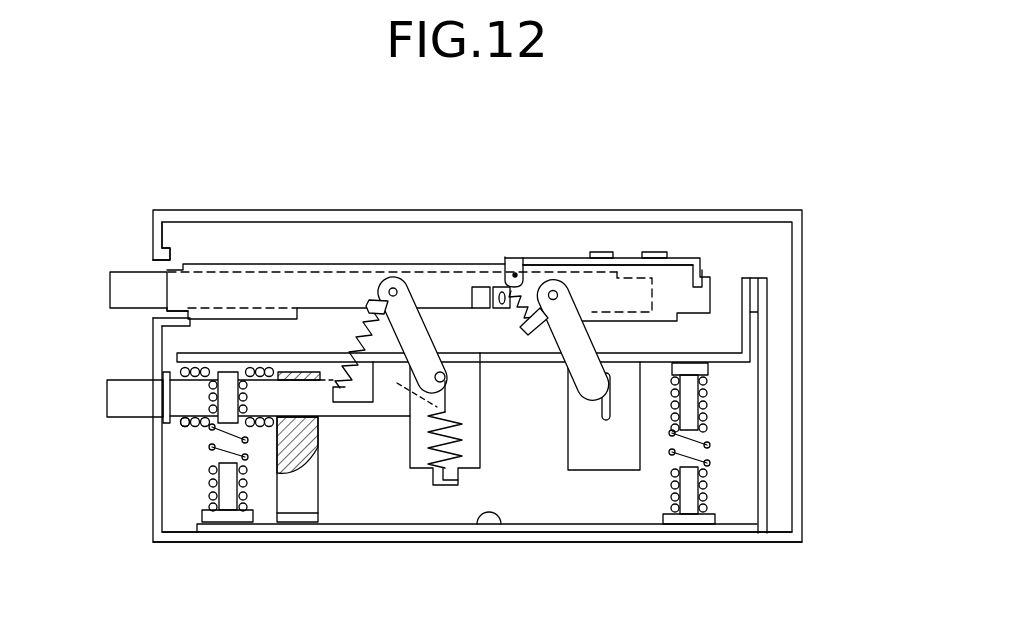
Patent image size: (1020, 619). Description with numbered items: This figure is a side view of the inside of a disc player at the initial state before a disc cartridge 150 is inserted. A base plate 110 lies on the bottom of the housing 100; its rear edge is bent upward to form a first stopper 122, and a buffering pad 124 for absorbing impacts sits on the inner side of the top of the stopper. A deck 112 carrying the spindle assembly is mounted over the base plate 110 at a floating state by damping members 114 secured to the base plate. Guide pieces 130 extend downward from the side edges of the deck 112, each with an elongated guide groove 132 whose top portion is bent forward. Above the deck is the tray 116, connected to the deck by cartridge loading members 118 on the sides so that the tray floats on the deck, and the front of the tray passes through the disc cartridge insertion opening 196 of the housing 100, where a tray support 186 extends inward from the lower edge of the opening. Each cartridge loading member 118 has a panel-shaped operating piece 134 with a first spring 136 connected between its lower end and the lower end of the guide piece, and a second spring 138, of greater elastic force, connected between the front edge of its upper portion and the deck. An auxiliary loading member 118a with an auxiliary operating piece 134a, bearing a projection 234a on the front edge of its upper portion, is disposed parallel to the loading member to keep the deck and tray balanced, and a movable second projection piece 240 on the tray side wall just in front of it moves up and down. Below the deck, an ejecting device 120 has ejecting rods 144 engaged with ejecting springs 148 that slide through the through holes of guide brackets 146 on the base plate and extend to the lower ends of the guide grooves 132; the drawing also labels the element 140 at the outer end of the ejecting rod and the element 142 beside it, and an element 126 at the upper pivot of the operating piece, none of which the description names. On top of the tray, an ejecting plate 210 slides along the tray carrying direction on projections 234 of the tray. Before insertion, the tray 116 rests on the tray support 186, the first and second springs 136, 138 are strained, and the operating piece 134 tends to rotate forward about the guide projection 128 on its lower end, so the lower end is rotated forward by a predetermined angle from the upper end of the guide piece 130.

The housing 100 is at (427, 540).
The base plate 110 is at (500, 527).
The deck 112 is at (723, 353).
The damping members 114 is at (715, 497).
The tray 116 is at (290, 264).
The cartridge loading member 118 is at (402, 252).
The auxiliary loading member 118a is at (566, 264).
The ejecting device 120 is at (175, 434).
The first stopper 122 is at (768, 437).
The buffering pad 124 is at (755, 285).
The pivot pin 126 is at (383, 282).
The guide projection 128 is at (455, 366).
The guide piece 130 is at (598, 457).
The guide groove 132 is at (600, 410).
The operating piece 134 is at (407, 297).
The auxiliary operating piece 134a is at (595, 345).
The first spring 136 is at (363, 313).
The second spring 138 is at (430, 433).
The plunger rod 140 is at (118, 398).
The flange 142 is at (167, 408).
The ejecting rod 144 is at (193, 392).
The guide bracket 146 is at (305, 498).
The ejecting spring 148 is at (200, 425).
The disc cartridge 150 is at (118, 285).
The tray support 186 is at (167, 313).
The disc cartridge insertion opening 196 is at (142, 262).
The ejecting plate 210 is at (682, 260).
The projections 234 is at (608, 252).
The projection 234a is at (512, 324).
The second projection piece 240 is at (535, 257).